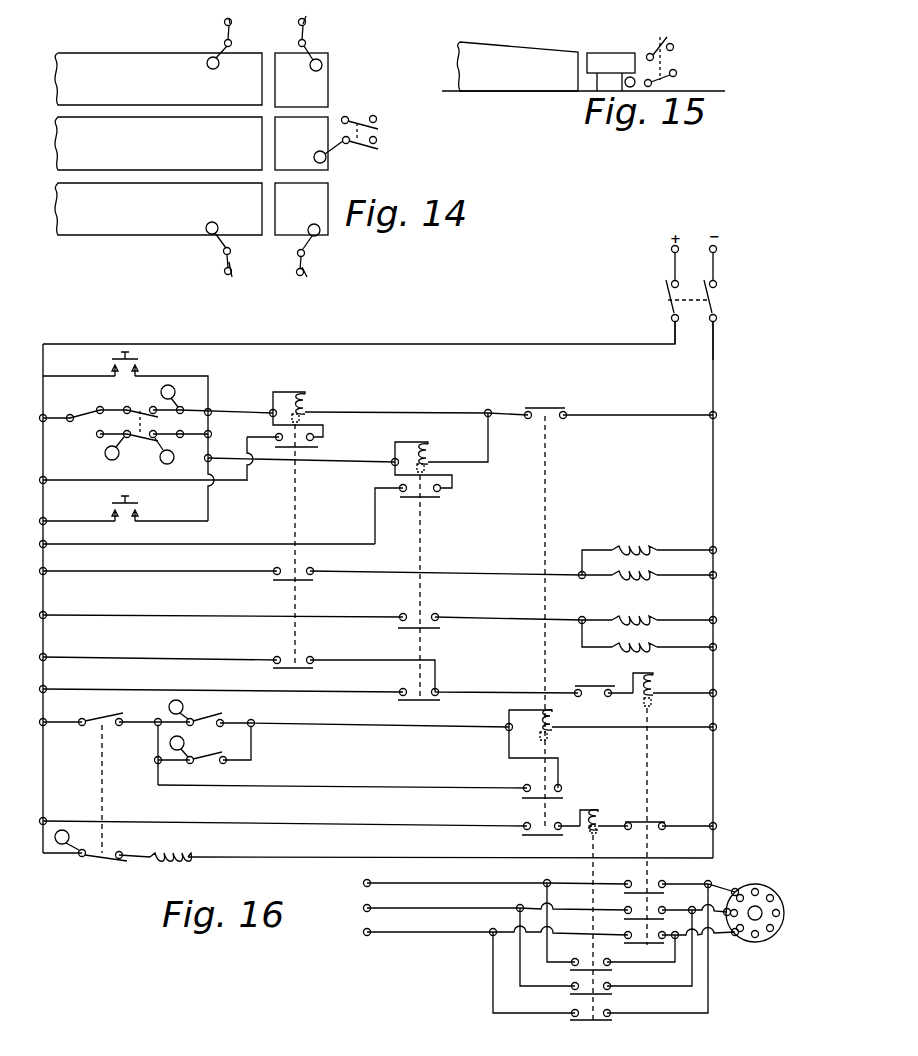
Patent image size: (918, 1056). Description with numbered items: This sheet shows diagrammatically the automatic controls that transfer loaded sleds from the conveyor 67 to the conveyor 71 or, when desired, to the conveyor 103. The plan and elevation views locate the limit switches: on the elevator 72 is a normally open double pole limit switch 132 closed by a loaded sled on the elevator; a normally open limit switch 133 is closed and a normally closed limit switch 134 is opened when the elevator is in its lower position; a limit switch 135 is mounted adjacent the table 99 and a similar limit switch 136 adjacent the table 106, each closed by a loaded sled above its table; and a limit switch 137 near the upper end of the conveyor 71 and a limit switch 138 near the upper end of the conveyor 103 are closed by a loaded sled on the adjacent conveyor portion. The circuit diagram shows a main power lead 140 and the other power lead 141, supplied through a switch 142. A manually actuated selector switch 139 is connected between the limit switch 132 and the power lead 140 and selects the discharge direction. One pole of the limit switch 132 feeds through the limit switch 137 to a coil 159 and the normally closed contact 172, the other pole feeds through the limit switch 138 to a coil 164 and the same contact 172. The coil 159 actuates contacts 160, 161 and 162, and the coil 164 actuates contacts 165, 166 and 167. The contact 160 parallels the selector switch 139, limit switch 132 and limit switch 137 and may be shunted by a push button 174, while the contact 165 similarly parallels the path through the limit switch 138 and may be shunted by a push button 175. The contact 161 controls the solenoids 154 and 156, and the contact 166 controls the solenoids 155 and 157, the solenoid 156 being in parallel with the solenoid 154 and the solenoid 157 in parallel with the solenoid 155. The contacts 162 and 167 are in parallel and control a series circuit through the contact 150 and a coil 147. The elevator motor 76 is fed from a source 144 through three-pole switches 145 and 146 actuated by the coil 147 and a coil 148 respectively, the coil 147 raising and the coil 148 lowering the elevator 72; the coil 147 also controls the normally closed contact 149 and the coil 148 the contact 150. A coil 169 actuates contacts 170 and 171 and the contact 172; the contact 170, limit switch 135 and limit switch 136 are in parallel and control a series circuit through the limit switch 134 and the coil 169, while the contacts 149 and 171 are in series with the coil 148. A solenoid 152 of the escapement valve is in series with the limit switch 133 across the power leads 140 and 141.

In FIG. 14, the conveyor 71 is at (158, 79).
In FIG. 14, the table 99 is at (301, 80).
In FIG. 14, the conveyor 67 is at (158, 143).
In FIG. 15, the conveyor 67 is at (514, 39).
In FIG. 14, the elevator 72 is at (301, 143).
In FIG. 15, the elevator 72 is at (619, 50).
In FIG. 14, the conveyor 103 is at (158, 209).
In FIG. 14, the table 106 is at (301, 209).
In FIG. 14, the limit switch 137 is at (215, 43).
In FIG. 16, the limit switch 137 is at (181, 396).
In FIG. 14, the limit switch 135 is at (316, 43).
In FIG. 16, the limit switch 135 is at (205, 713).
In FIG. 14, the limit switch 132 is at (351, 139).
In FIG. 16, the limit switch 132 is at (154, 435).
In FIG. 14, the limit switch 138 is at (213, 249).
In FIG. 16, the limit switch 138 is at (178, 451).
In FIG. 14, the limit switch 136 is at (314, 256).
In FIG. 16, the limit switch 136 is at (203, 755).
In FIG. 15, the limit switch 134 is at (655, 53).
In FIG. 16, the limit switch 134 is at (94, 783).
In FIG. 15, the limit switch 133 is at (667, 81).
In FIG. 16, the limit switch 133 is at (91, 853).
In FIG. 16, the switch 142 is at (676, 296).
In FIG. 16, the main power lead 140 is at (672, 336).
In FIG. 16, the power lead 141 is at (716, 336).
In FIG. 16, the push button 174 is at (125, 382).
In FIG. 16, the push button 175 is at (125, 508).
In FIG. 16, the selector switch 139 is at (158, 409).
In FIG. 16, the coil 159 is at (379, 407).
In FIG. 16, the contact 160 is at (299, 544).
In FIG. 16, the coil 164 is at (442, 449).
In FIG. 16, the contact 165 is at (410, 587).
In FIG. 16, the contact 172 is at (600, 610).
In FIG. 16, the solenoid 154 is at (646, 555).
In FIG. 16, the solenoid 156 is at (647, 568).
In FIG. 16, the solenoid 155 is at (646, 613).
In FIG. 16, the solenoid 157 is at (647, 636).
In FIG. 16, the contact 161 is at (298, 581).
In FIG. 16, the contact 166 is at (424, 629).
In FIG. 16, the contact 162 is at (298, 671).
In FIG. 16, the contact 167 is at (423, 703).
In FIG. 16, the contact 150 is at (604, 683).
In FIG. 16, the coil 147 is at (673, 809).
In FIG. 16, the coil 169 is at (610, 749).
In FIG. 16, the contact 170 is at (537, 800).
In FIG. 16, the contact 171 is at (551, 837).
In FIG. 16, the coil 148 is at (605, 910).
In FIG. 16, the contact 149 is at (669, 817).
In FIG. 16, the solenoid 152 is at (416, 864).
In FIG. 16, the source 144 is at (479, 908).
In FIG. 16, the three-pole switch 145 is at (679, 904).
In FIG. 16, the three-pole switch 146 is at (600, 961).
In FIG. 16, the elevator motor 76 is at (745, 941).